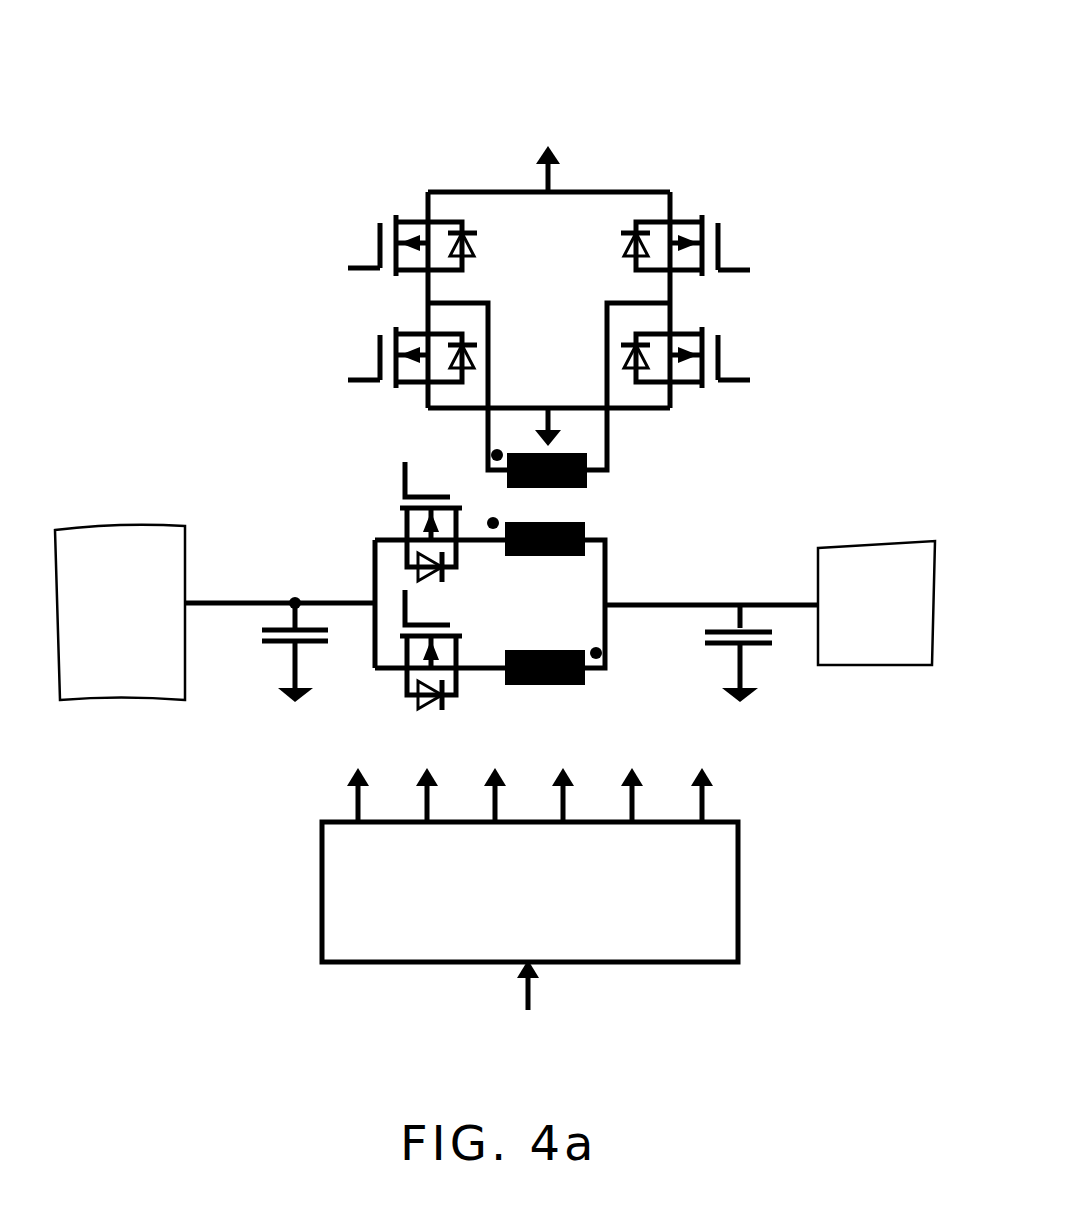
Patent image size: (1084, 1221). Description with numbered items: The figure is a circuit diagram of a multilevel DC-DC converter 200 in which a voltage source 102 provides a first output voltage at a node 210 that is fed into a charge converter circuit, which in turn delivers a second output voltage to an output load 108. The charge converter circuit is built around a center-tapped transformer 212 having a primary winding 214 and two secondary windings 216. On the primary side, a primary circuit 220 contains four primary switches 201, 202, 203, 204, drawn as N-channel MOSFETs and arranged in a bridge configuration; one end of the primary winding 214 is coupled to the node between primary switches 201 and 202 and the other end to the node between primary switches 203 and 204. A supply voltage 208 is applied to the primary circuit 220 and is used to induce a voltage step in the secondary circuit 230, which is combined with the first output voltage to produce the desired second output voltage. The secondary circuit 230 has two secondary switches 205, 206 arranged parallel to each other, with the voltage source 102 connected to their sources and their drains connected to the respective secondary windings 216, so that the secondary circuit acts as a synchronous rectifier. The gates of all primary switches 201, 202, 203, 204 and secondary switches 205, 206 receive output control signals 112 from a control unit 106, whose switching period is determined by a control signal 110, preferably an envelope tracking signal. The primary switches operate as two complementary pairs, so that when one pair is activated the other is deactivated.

The multilevel DC-DC converter 200 is at (320, 70).
The primary switch 201 is at (370, 232).
The primary switch 202 is at (378, 388).
The primary switch 203 is at (742, 235).
The primary switch 204 is at (745, 350).
The secondary switch 205 is at (395, 530).
The secondary switch 206 is at (390, 705).
The supply voltage Vsup 208 is at (566, 105).
The node 210 is at (292, 600).
The transformer 212 is at (604, 501).
The primary winding 214 is at (585, 452).
The secondary windings 216 is at (525, 650).
The primary circuit 220 is at (306, 318).
The secondary circuit 230 is at (636, 570).
The voltage source 102 is at (97, 535).
The control unit 106 is at (740, 906).
The output load 108 is at (882, 546).
The control signal 110 is at (534, 1003).
The output control signals 112 is at (748, 770).